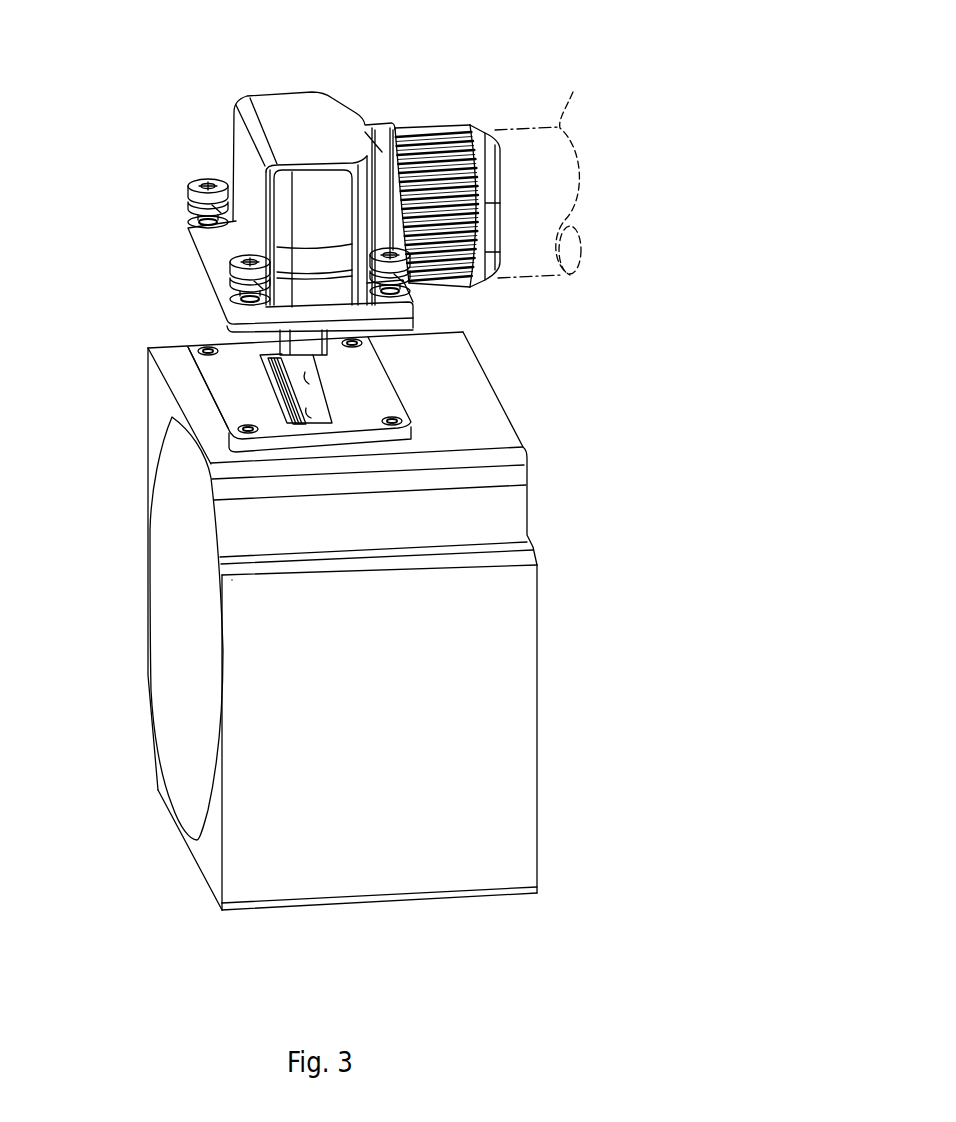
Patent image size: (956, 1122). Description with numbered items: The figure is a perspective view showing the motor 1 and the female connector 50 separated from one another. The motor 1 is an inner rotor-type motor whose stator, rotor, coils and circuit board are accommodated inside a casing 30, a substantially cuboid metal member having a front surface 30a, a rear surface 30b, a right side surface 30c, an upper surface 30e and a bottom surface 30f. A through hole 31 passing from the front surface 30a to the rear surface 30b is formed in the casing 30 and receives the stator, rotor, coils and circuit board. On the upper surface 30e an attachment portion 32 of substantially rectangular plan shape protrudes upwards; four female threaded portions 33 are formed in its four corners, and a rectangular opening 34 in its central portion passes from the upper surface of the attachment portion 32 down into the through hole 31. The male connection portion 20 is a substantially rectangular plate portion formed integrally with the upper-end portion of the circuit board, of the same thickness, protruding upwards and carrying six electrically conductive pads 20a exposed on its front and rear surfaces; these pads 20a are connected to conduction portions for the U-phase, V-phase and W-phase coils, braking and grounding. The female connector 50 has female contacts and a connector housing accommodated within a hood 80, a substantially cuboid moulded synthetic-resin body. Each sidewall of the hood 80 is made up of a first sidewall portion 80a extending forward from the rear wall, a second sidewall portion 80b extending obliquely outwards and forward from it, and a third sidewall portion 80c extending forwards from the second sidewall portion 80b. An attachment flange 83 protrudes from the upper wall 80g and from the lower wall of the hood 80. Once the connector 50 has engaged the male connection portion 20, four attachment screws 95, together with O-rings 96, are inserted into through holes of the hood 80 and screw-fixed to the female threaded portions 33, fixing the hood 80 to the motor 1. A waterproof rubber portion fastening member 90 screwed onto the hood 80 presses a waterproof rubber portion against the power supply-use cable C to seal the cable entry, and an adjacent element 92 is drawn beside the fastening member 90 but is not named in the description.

The motor 1 is at (578, 492).
The male connection portion 20 is at (268, 372).
The electrically conductive pads 20a is at (267, 388).
The casing 30 is at (538, 855).
The front surface 30a is at (210, 860).
The rear surface 30b is at (540, 617).
The right side surface 30c is at (515, 720).
The upper surface 30e is at (503, 428).
The bottom surface 30f is at (450, 904).
The through hole 31 is at (172, 720).
The attachment portion 32 is at (228, 404).
The female threaded portions 33 is at (200, 351).
The opening 34 is at (363, 381).
The female connector 50 is at (427, 76).
The hood 80 is at (296, 100).
The first sidewall portion 80a is at (305, 217).
The second sidewall portion 80b is at (310, 262).
The third sidewall portion 80c is at (313, 300).
The upper wall 80g is at (236, 160).
The attachment flange 83 is at (215, 240).
The waterproof rubber portion fastening member 90 is at (487, 132).
The gear 92 is at (425, 128).
The attachment screws 95 is at (212, 178).
The O-rings 96 is at (198, 222).
The power supply-use cable C is at (538, 172).